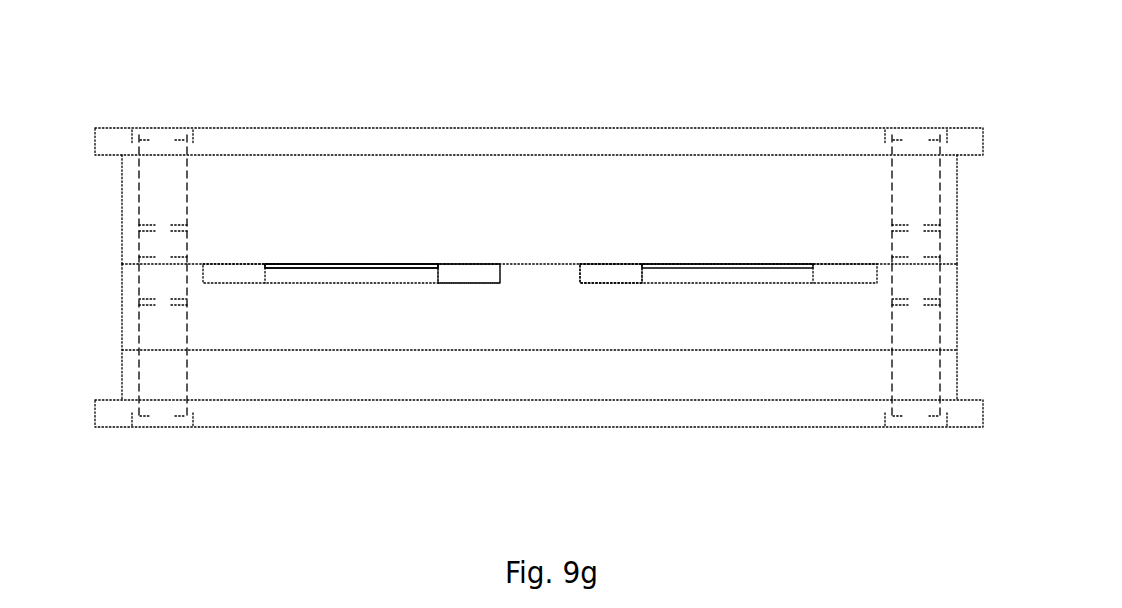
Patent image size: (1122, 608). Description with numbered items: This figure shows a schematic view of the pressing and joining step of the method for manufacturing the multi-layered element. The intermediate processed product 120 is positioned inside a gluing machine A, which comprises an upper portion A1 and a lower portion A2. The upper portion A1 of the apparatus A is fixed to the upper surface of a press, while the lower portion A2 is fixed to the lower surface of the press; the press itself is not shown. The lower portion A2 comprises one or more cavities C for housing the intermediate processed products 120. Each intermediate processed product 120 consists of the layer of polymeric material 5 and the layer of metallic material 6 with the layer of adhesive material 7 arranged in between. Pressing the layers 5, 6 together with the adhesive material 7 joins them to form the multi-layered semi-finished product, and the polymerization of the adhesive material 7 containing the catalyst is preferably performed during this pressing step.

The gluing machine A is at (553, 217).
The upper portion A1 is at (955, 235).
The lower portion A2 is at (955, 312).
The layer of polymeric material 5 is at (292, 274).
The layer of metallic material 6 is at (300, 264).
The layer of adhesive material 7 is at (367, 267).
The cavity C is at (468, 273).
The intermediate processed product 120 is at (730, 262).